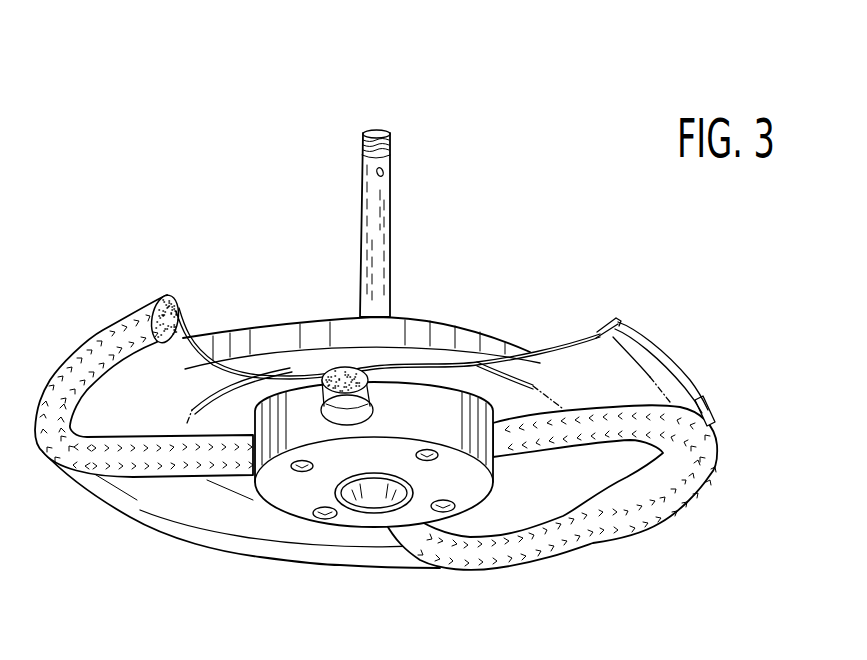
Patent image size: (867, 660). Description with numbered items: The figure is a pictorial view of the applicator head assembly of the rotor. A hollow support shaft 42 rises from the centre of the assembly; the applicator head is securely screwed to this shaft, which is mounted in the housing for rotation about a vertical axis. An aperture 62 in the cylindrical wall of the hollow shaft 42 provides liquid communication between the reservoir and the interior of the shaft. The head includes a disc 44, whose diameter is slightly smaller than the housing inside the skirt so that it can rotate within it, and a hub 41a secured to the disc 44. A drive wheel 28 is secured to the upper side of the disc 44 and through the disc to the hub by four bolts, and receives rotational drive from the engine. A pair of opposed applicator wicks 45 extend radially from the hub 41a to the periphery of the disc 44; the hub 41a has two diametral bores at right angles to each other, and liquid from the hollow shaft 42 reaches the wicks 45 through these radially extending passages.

The drive wheel 28 is at (423, 332).
The hollow support shaft 42 is at (380, 237).
The aperture 62 is at (387, 169).
The disc 44 is at (573, 333).
The applicator wicks 45 is at (116, 320).
The hub 41a is at (290, 498).